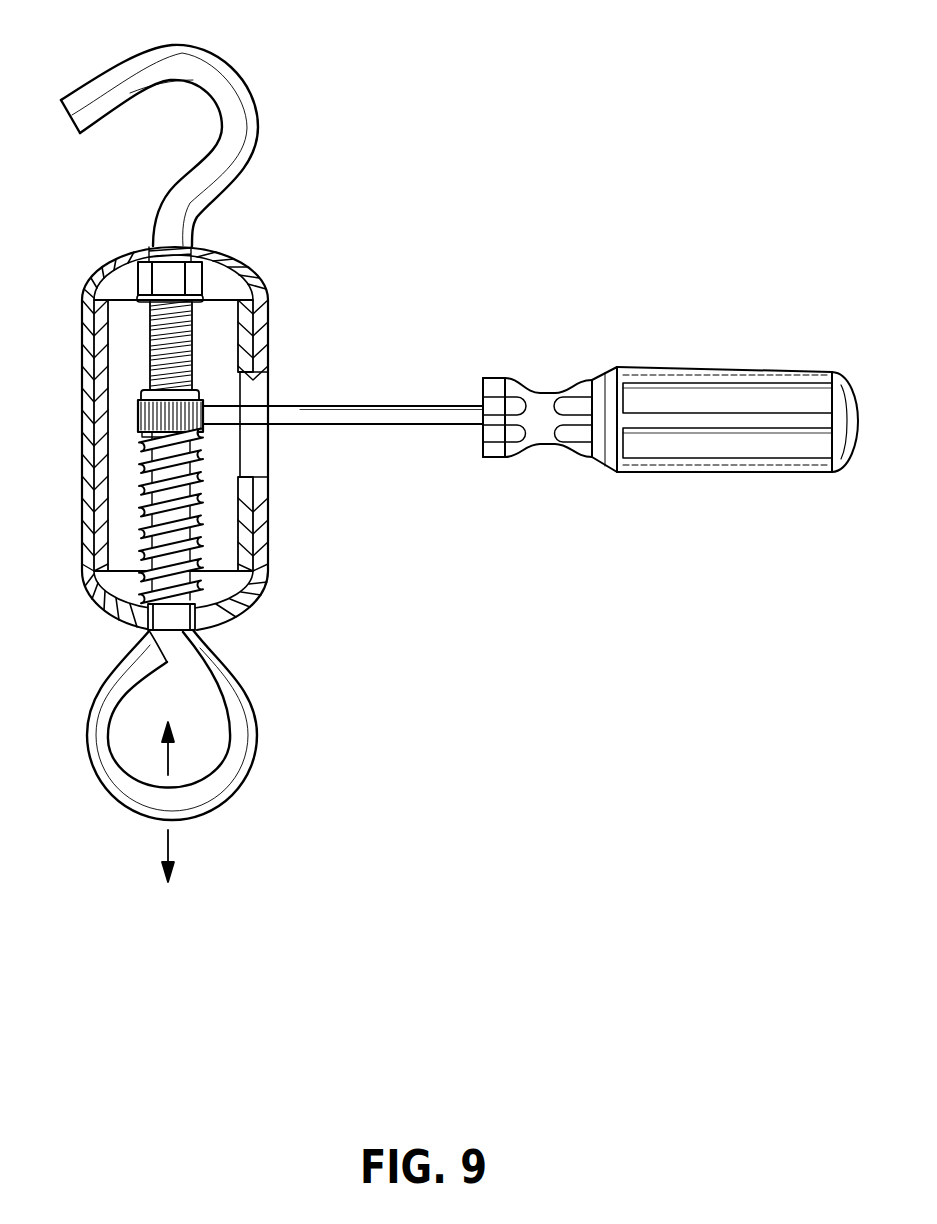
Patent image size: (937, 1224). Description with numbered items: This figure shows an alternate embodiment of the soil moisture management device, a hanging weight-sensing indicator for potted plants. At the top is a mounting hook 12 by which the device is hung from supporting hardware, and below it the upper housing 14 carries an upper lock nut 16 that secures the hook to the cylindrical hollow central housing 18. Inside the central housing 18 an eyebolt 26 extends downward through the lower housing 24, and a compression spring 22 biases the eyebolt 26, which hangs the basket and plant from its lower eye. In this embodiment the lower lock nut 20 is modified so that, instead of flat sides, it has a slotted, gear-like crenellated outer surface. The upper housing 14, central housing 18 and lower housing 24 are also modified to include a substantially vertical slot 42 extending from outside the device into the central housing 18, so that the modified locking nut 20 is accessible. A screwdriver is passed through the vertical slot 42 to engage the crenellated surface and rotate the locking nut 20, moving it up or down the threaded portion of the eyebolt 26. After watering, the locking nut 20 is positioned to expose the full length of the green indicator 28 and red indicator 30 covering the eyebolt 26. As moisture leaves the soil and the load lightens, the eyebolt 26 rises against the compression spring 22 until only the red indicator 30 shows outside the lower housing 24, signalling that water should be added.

The mounting hook 12 is at (228, 103).
The upper housing 14 is at (263, 317).
The upper lock nut 16 is at (145, 277).
The cylindrical hollow central housing 18 is at (247, 358).
The lower lock nut 20 is at (138, 415).
The compression spring 22 is at (192, 507).
The lower housing 24 is at (82, 568).
The eyebolt 26 is at (240, 755).
The green indicator 28 is at (143, 527).
The red indicator 30 is at (168, 620).
The vertical slot 42 is at (255, 393).